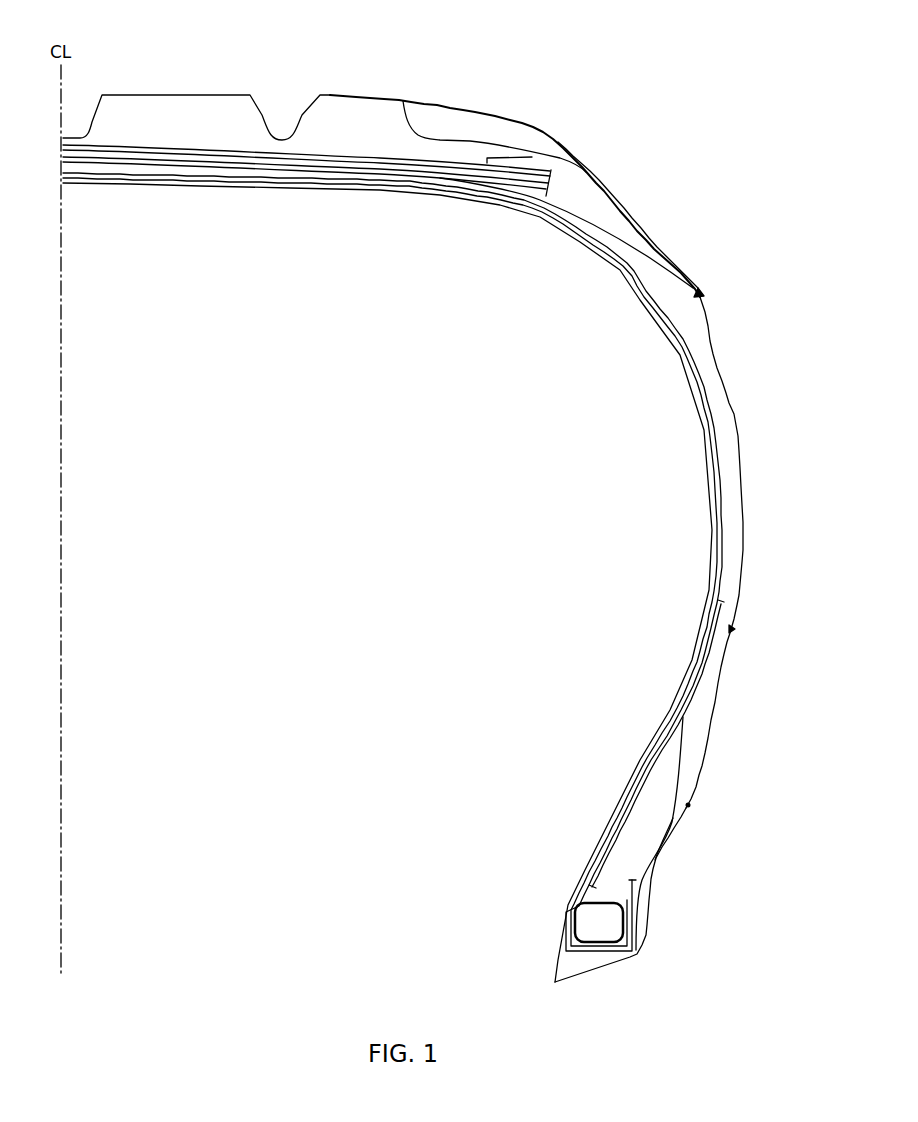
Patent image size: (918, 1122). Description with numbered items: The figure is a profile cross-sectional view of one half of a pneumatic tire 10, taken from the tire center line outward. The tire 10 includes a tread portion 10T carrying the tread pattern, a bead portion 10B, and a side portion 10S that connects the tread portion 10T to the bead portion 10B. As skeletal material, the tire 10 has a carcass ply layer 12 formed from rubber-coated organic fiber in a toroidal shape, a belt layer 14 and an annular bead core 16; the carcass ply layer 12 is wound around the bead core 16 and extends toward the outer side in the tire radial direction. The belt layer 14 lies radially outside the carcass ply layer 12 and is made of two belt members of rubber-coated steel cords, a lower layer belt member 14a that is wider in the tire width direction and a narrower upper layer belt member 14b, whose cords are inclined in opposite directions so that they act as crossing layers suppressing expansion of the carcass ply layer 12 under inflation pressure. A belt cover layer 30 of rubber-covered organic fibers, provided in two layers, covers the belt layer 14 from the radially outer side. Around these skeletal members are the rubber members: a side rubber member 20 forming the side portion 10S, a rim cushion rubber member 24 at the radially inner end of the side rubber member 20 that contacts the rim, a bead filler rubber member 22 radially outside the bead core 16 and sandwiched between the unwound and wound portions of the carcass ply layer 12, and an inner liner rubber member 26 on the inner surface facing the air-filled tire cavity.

The tire 10 is at (634, 108).
The tread portion 10T is at (430, 87).
The side portion 10S is at (756, 481).
The bead portion 10B is at (664, 929).
The carcass ply layer 12 is at (517, 197).
The belt layer 14 is at (345, 120).
The lower layer belt member 14a is at (563, 185).
The upper layer belt member 14b is at (562, 180).
The bead core 16 is at (598, 920).
The side rubber member 20 is at (652, 273).
The bead filler rubber member 22 is at (632, 828).
The rim cushion rubber member 24 is at (652, 848).
The inner liner rubber member 26 is at (680, 355).
The belt cover layer 30 is at (378, 157).